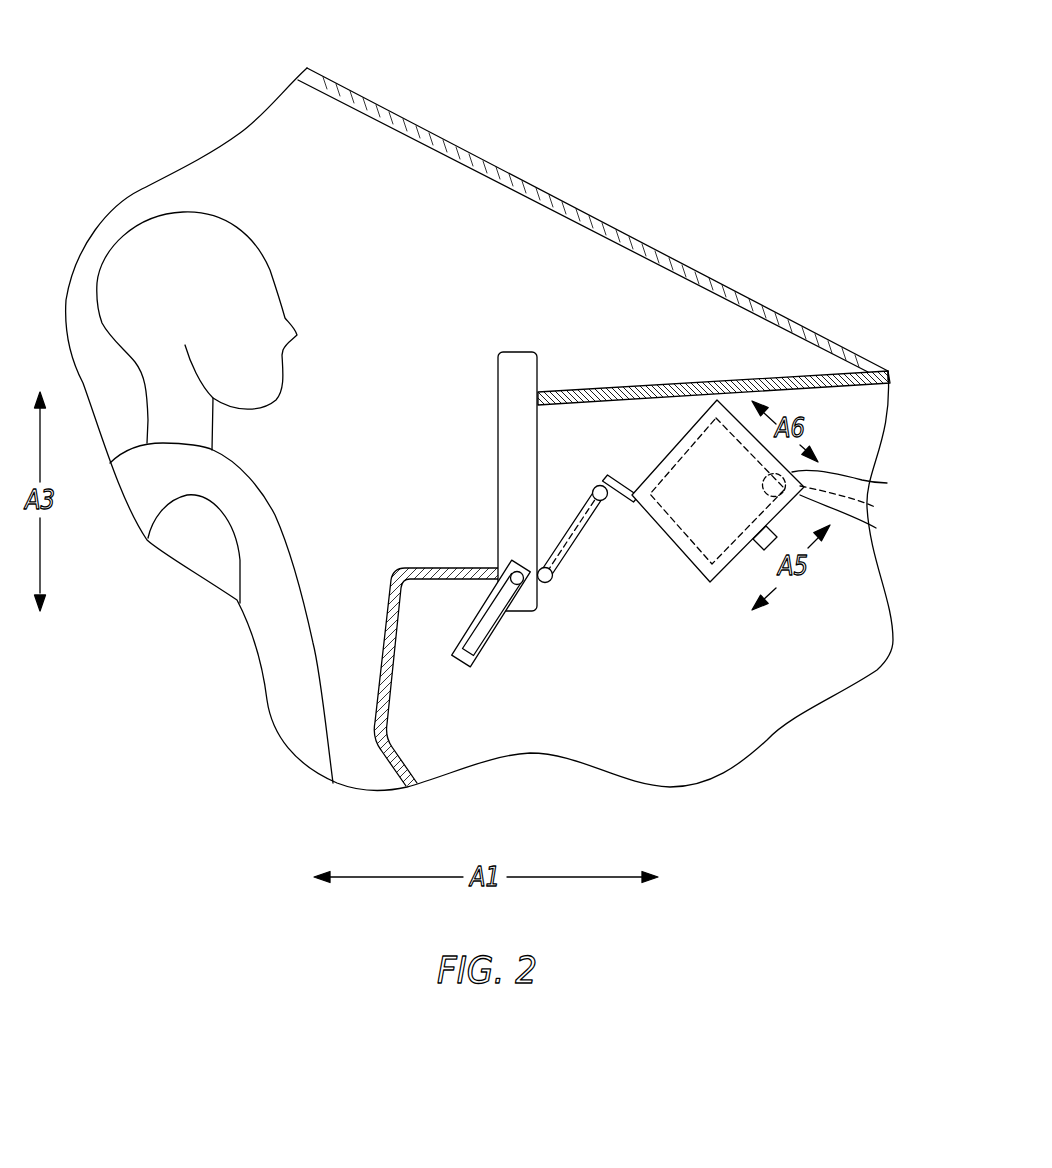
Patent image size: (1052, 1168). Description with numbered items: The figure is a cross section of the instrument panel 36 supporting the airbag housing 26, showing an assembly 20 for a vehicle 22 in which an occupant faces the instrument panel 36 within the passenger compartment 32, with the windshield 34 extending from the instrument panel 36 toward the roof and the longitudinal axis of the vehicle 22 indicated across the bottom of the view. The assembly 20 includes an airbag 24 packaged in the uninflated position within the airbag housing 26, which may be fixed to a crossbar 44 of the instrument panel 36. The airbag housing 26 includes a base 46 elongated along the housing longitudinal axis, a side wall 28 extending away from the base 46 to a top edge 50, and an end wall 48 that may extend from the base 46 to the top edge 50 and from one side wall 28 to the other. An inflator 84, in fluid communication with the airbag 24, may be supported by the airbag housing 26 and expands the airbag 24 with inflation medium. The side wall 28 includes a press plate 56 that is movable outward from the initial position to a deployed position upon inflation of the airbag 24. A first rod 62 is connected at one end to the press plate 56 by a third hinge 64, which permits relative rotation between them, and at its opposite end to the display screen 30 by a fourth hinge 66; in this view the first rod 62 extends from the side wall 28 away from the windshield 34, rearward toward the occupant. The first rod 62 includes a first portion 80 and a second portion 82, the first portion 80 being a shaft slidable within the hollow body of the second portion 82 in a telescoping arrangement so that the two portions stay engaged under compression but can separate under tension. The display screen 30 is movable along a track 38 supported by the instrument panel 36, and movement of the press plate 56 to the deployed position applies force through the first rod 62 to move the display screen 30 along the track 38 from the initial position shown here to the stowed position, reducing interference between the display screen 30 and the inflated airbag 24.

The assembly 20 is at (818, 594).
The vehicle 22 is at (616, 211).
The airbag 24 is at (713, 499).
The airbag housing 26 is at (855, 515).
The side wall 28 is at (675, 553).
The display screen 30 is at (497, 430).
The passenger compartment 32 is at (416, 228).
The windshield 34 is at (607, 220).
The instrument panel 36 is at (433, 567).
The track 38 is at (491, 644).
The crossbar 44 is at (758, 550).
The base 46 is at (866, 517).
The end wall 48 is at (710, 560).
The top edge 50 is at (678, 442).
The press plate 56 is at (611, 498).
The first rod 62 is at (587, 545).
The third hinge 64 is at (596, 485).
The fourth hinge 66 is at (553, 588).
The first portion 80 is at (581, 505).
The second portion 82 is at (545, 562).
The inflator 84 is at (875, 507).